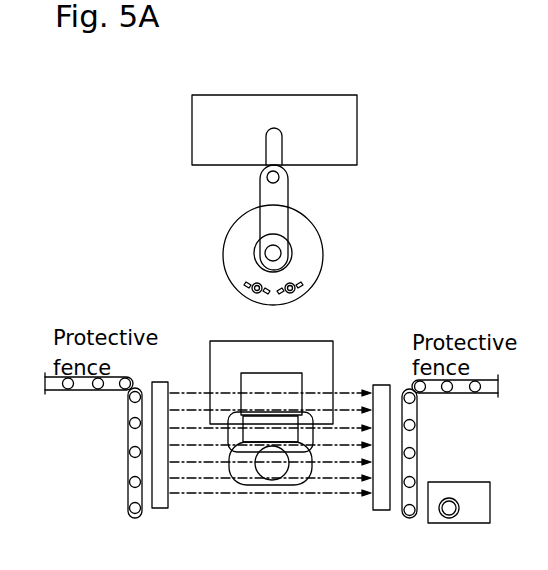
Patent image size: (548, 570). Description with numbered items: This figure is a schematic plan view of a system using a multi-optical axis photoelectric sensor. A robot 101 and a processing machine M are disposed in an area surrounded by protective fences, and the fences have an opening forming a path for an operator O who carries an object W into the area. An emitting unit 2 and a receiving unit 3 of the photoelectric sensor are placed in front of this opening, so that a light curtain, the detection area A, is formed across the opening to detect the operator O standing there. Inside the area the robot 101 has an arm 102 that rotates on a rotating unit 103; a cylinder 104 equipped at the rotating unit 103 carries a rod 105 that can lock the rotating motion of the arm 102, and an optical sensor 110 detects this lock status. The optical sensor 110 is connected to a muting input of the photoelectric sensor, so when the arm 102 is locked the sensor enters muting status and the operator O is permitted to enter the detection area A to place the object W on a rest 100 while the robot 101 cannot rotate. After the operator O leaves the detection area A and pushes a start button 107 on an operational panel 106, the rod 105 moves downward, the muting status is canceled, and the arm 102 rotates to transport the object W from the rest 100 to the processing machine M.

The processing machine M is at (343, 123).
The arm 102 is at (270, 143).
The robot 101 is at (255, 252).
The rotating unit 103 is at (226, 270).
The rod 105 is at (296, 282).
The cylinder 104 is at (290, 288).
The optical sensor 110 is at (252, 296).
The rest 100 is at (318, 346).
The object W is at (293, 385).
The operator O is at (255, 485).
The detection area A is at (205, 493).
The emitting unit 2 is at (160, 508).
The receiving unit 3 is at (382, 510).
The operational panel 106 is at (470, 495).
The start button 107 is at (447, 498).